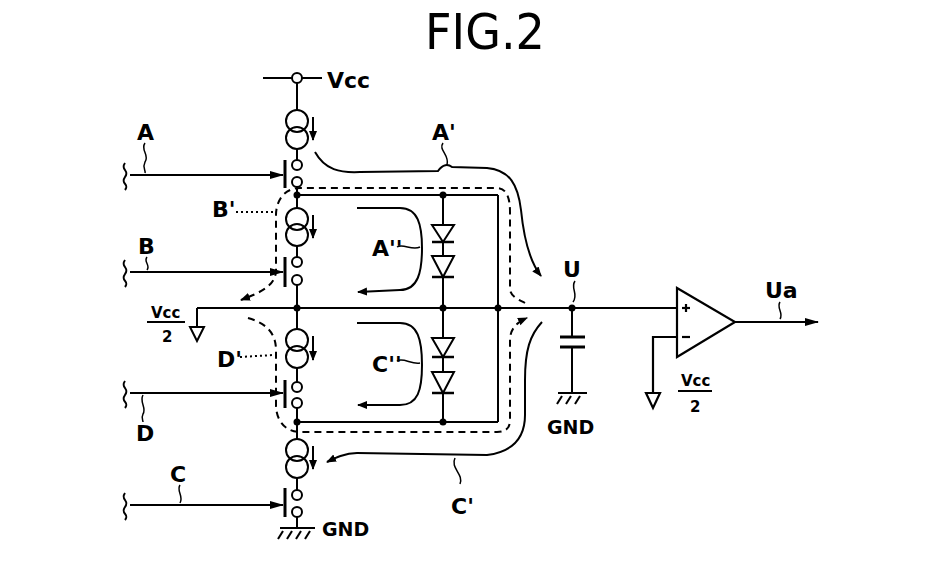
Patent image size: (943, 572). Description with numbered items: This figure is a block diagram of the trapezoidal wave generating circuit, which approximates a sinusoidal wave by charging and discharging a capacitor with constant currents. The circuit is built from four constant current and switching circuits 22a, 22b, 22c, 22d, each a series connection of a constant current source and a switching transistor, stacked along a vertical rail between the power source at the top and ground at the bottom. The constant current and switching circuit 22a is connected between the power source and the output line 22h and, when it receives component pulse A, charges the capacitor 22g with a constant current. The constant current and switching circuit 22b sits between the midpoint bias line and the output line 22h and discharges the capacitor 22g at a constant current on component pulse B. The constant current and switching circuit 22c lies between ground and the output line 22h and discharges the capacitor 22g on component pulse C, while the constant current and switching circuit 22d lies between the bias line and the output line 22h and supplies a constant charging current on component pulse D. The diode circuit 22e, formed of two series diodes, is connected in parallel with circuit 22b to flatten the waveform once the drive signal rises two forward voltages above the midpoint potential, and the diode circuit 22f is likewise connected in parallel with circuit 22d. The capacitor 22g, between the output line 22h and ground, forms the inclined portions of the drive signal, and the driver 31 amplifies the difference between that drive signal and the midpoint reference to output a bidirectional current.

The constant current and switching circuit 22a is at (273, 143).
The constant current and switching circuit 22b is at (348, 262).
The constant current and switching circuit 22c is at (273, 471).
The constant current and switching circuit 22d is at (348, 385).
The diode circuit 22e is at (492, 262).
The diode circuit 22f is at (488, 391).
The capacitor 22g is at (592, 346).
The output line 22h is at (618, 306).
The driver 31 is at (700, 295).